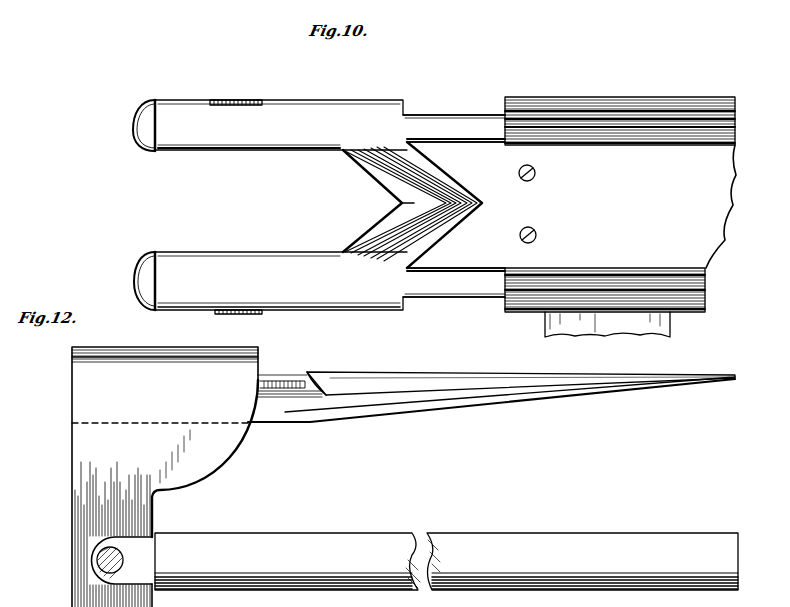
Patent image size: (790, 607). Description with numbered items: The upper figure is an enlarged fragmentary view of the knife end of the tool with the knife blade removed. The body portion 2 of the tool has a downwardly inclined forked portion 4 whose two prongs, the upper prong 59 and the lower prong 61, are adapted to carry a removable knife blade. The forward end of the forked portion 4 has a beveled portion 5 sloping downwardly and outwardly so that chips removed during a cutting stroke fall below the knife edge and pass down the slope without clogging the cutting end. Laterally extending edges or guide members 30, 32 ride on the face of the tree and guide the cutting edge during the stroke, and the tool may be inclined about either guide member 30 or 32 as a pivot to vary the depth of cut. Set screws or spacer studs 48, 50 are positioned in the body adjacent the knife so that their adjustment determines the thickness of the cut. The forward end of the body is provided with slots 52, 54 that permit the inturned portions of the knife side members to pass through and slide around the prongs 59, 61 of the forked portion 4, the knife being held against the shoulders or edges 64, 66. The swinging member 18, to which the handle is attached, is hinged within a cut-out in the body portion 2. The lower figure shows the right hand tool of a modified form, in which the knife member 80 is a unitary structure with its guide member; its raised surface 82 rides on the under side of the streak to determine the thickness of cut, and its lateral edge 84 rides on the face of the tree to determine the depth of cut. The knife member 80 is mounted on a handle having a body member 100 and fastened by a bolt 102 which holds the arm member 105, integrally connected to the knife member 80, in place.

In FIG. 10, the body portion 2 is at (700, 263).
In FIG. 10, the forked portion 4 is at (240, 252).
In FIG. 10, the beveled portion 5 is at (380, 233).
In FIG. 10, the swinging member 18 is at (668, 327).
In FIG. 10, the guide member 30 is at (633, 97).
In FIG. 10, the guide member 32 is at (533, 318).
In FIG. 10, the spacer stud 48 is at (537, 235).
In FIG. 10, the spacer stud 50 is at (536, 173).
In FIG. 10, the slot 52 is at (460, 114).
In FIG. 10, the slot 54 is at (455, 300).
In FIG. 10, the upper arm 59 is at (328, 100).
In FIG. 10, the lower arm 61 is at (321, 310).
In FIG. 10, the shoulder 64 is at (240, 100).
In FIG. 10, the shoulder 66 is at (250, 314).
In FIG. 12, the knife member 80 is at (80, 388).
In FIG. 12, the raised surface 82 is at (405, 372).
In FIG. 12, the lateral edge 84 is at (408, 402).
In FIG. 12, the body member 100 is at (356, 540).
In FIG. 12, the bolt 102 is at (100, 556).
In FIG. 12, the arm member 105 is at (146, 517).